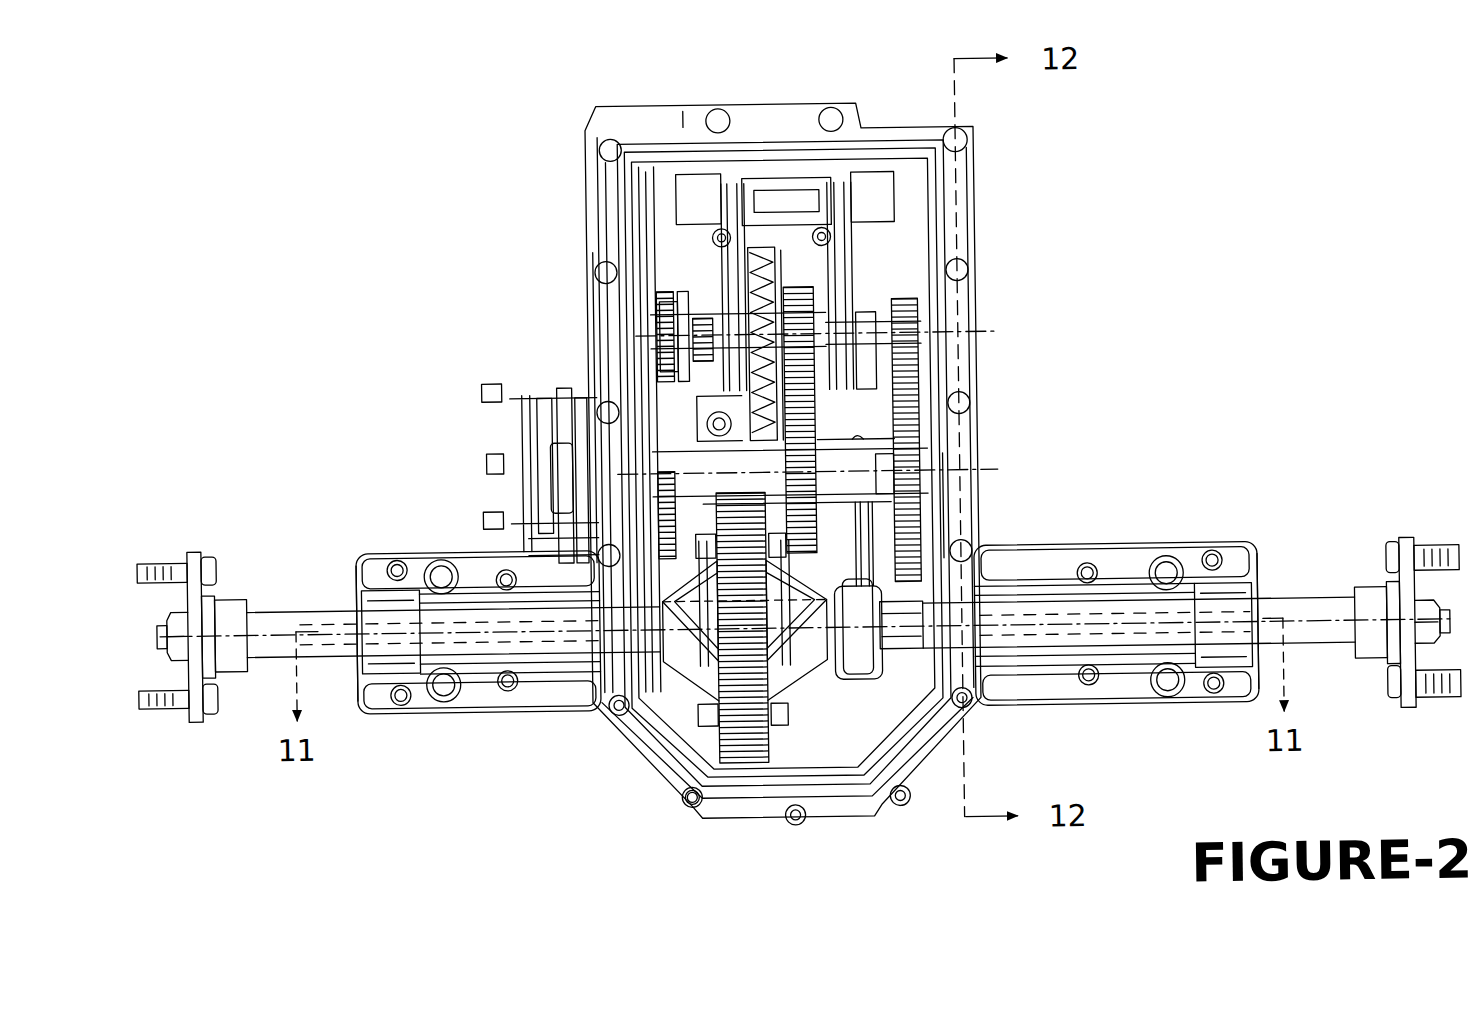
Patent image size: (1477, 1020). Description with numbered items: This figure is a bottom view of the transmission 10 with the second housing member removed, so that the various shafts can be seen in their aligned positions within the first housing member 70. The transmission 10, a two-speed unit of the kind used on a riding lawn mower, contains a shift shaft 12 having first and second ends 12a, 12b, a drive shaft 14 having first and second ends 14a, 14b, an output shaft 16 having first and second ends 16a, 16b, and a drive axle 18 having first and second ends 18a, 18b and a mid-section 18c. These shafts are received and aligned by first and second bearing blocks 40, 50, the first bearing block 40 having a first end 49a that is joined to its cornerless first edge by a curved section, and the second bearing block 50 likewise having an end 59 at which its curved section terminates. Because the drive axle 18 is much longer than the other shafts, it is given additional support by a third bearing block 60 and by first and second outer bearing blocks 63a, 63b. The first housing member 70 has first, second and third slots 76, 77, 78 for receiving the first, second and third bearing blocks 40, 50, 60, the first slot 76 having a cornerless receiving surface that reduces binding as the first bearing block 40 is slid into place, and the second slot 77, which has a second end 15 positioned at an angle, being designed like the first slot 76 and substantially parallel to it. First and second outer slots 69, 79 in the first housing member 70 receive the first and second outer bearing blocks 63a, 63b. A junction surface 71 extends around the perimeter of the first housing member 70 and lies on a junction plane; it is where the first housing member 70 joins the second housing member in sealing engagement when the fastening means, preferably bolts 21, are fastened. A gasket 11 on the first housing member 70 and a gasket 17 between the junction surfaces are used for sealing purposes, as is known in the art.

The transmission 10 is at (478, 146).
The gasket 11 is at (640, 513).
The shift shaft 12 is at (793, 200).
The first end of shift shaft 12a is at (911, 199).
The second end of shift shaft 12b is at (661, 193).
The drive shaft 14 is at (1010, 340).
The first end of drive shaft 14a is at (919, 347).
The second end of drive shaft 14b is at (754, 339).
The second end of second slot 15 is at (644, 158).
The output shaft 16 is at (1019, 480).
The first end of output shaft 16a is at (917, 467).
The second end of output shaft 16b is at (600, 472).
The gasket 17 is at (635, 620).
The drive axle 18 is at (465, 635).
The first end of drive axle 18a is at (1305, 632).
The second end of drive axle 18b is at (268, 620).
The mid-section of drive axle 18c is at (900, 642).
The bolts 21 is at (686, 801).
The first bearing block 40 is at (963, 322).
The first end of first bearing block 49a is at (964, 521).
The second bearing block 50 is at (619, 317).
The housing wall 59 is at (618, 217).
The third bearing block 60 is at (860, 651).
The first outer bearing block 63a is at (1210, 646).
The second outer bearing block 63b is at (395, 639).
The first outer slot 69 is at (1259, 587).
The first housing member 70 is at (591, 697).
The junction surface 71 is at (690, 123).
The first slot 76 is at (981, 255).
The second slot 77 is at (597, 250).
The third slot 78 is at (851, 681).
The second outer slot 79 is at (354, 574).